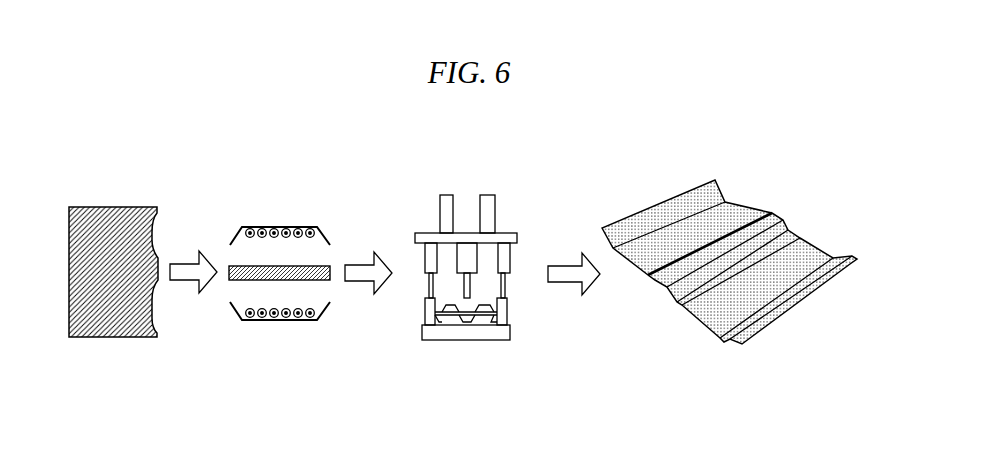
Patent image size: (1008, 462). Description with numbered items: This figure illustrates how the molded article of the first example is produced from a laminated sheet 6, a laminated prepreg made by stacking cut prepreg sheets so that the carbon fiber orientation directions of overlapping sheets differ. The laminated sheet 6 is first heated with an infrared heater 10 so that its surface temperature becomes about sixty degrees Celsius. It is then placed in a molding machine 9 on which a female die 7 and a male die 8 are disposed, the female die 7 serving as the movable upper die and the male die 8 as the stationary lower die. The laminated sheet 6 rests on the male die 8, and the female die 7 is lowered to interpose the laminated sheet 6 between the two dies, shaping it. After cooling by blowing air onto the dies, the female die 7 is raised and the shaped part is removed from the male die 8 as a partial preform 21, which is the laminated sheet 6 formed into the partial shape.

The laminated sheet 6 is at (122, 344).
The infrared heater 10 is at (273, 211).
The molding machine 9 is at (468, 192).
The female die 7 is at (509, 313).
The male die 8 is at (449, 338).
The partial preform 21 is at (730, 202).